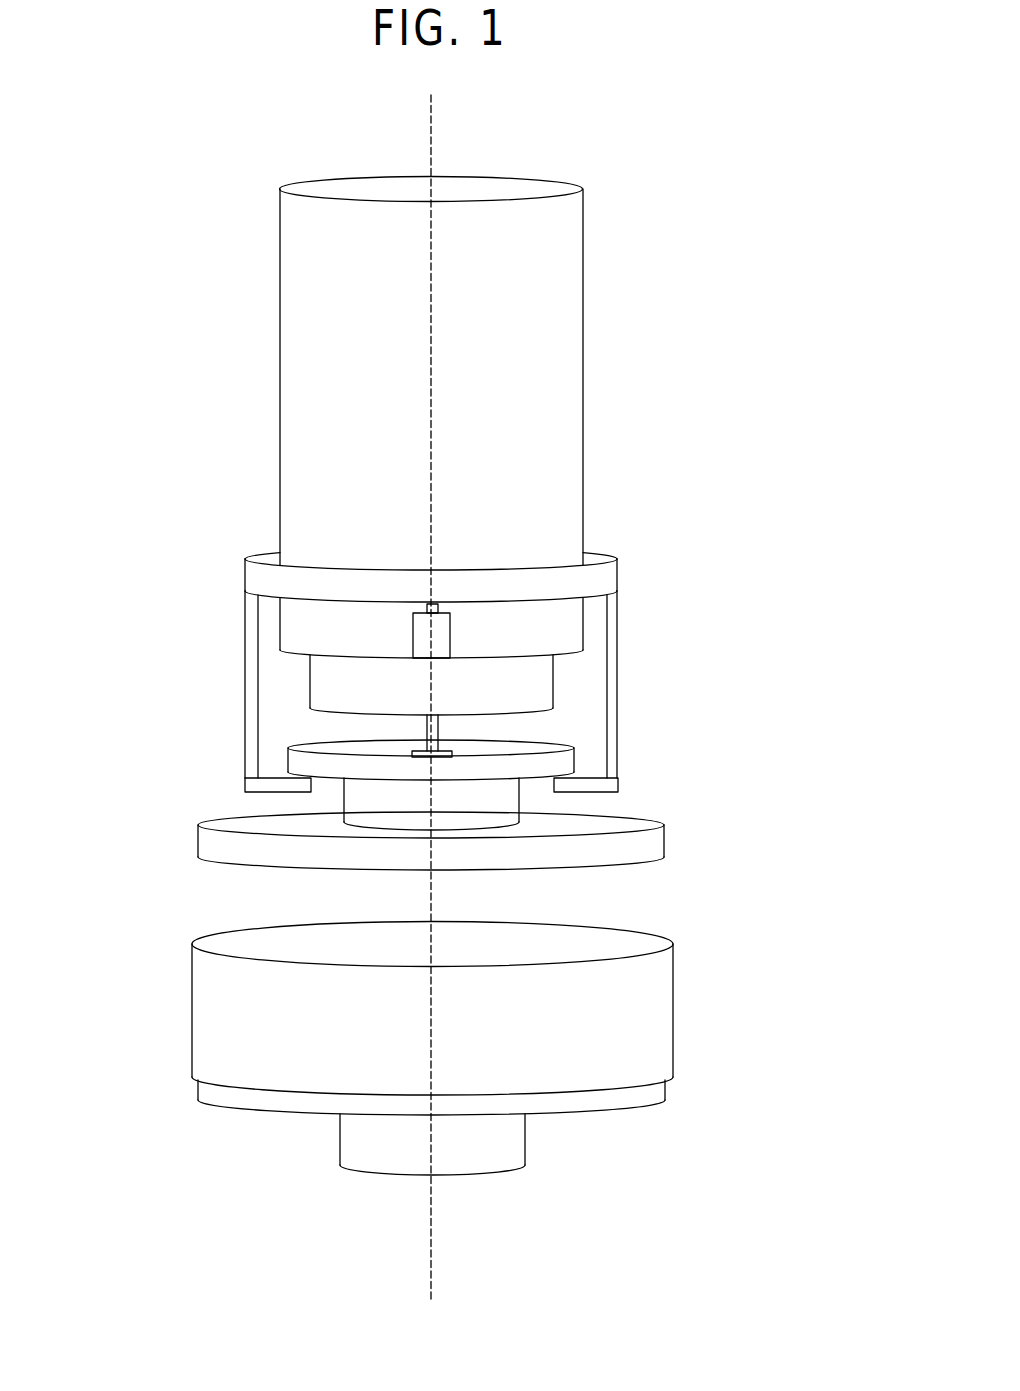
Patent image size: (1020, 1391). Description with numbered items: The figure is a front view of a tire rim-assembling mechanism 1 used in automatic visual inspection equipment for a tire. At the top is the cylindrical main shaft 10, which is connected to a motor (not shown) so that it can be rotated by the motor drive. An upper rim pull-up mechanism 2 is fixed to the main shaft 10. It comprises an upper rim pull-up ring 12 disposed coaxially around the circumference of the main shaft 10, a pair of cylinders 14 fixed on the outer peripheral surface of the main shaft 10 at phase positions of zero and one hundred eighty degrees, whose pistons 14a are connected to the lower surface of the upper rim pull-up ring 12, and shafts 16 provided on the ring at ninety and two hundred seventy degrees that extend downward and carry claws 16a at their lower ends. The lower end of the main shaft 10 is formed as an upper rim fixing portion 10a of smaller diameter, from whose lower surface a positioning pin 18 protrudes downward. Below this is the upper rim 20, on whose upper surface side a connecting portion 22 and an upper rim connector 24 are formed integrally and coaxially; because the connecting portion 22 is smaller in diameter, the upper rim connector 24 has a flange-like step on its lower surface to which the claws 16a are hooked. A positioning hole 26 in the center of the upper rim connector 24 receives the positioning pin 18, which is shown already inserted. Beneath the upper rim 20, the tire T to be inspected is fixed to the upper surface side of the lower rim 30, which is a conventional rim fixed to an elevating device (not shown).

The tire rim-assembling mechanism 1 is at (138, 258).
The upper rim pull-up mechanism 2 is at (155, 508).
The main shaft 10 is at (563, 282).
The upper rim fixing portion 10a is at (533, 683).
The upper rim pull-up ring 12 is at (254, 568).
The cylinder 14 is at (423, 643).
The piston 14a is at (425, 607).
The shaft 16 is at (250, 682).
The claw 16a is at (250, 787).
The positioning pin 18 is at (440, 737).
The upper rim 20 is at (653, 847).
The connecting portion 22 is at (503, 807).
The upper rim connector 24 is at (538, 765).
The positioning hole 26 is at (412, 752).
The lower rim 30 is at (497, 1160).
The tire T is at (652, 1000).